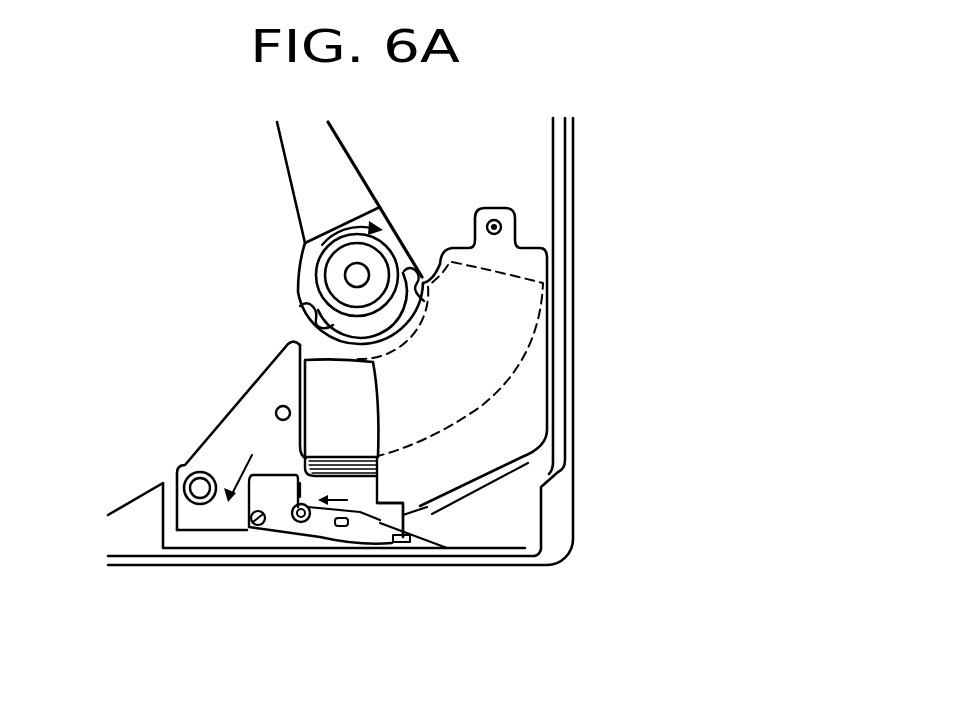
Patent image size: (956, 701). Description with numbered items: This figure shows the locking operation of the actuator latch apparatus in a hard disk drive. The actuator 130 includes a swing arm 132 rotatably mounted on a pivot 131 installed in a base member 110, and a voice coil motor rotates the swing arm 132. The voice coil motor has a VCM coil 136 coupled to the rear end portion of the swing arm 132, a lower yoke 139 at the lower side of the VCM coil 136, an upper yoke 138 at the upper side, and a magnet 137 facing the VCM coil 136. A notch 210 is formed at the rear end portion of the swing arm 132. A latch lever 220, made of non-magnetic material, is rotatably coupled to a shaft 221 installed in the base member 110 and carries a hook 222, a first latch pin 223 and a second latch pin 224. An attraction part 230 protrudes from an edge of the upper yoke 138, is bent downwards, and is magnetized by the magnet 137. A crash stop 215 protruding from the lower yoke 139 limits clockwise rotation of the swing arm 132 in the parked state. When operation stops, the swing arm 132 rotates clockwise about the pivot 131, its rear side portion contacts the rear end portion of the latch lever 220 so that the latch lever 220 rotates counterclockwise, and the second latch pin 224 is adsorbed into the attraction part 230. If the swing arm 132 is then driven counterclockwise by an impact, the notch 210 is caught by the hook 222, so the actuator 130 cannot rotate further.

The base member 110 is at (503, 566).
The actuator 130 is at (383, 180).
The pivot 131 is at (360, 272).
The swing arm 132 is at (385, 226).
The VCM coil 136 is at (295, 447).
The magnet 137 is at (545, 285).
The upper yoke 138 is at (518, 423).
The lower yoke 139 is at (182, 515).
The notch 210 is at (342, 455).
The crash stop 215 is at (277, 409).
The latch lever 220 is at (325, 541).
The shaft 221 is at (300, 524).
The hook 222 is at (390, 541).
The first latch pin 223 is at (256, 527).
The second latch pin 224 is at (447, 548).
The attraction part 230 is at (403, 507).